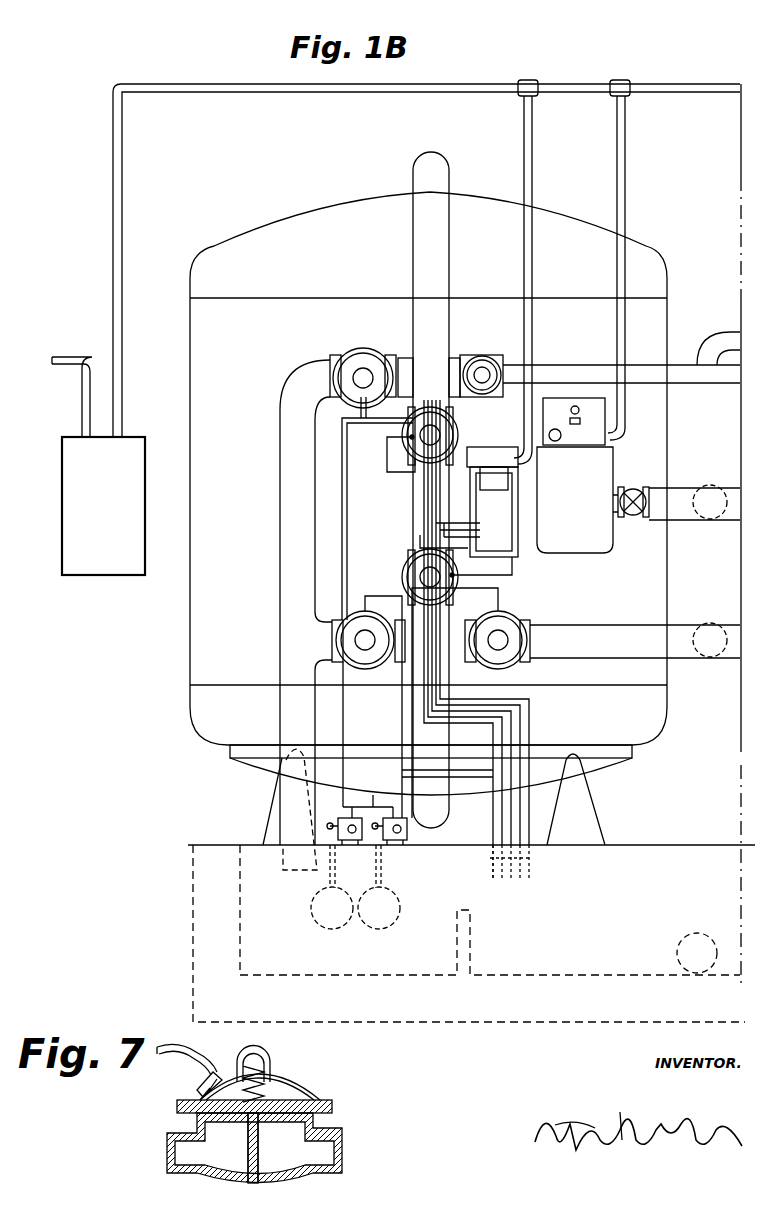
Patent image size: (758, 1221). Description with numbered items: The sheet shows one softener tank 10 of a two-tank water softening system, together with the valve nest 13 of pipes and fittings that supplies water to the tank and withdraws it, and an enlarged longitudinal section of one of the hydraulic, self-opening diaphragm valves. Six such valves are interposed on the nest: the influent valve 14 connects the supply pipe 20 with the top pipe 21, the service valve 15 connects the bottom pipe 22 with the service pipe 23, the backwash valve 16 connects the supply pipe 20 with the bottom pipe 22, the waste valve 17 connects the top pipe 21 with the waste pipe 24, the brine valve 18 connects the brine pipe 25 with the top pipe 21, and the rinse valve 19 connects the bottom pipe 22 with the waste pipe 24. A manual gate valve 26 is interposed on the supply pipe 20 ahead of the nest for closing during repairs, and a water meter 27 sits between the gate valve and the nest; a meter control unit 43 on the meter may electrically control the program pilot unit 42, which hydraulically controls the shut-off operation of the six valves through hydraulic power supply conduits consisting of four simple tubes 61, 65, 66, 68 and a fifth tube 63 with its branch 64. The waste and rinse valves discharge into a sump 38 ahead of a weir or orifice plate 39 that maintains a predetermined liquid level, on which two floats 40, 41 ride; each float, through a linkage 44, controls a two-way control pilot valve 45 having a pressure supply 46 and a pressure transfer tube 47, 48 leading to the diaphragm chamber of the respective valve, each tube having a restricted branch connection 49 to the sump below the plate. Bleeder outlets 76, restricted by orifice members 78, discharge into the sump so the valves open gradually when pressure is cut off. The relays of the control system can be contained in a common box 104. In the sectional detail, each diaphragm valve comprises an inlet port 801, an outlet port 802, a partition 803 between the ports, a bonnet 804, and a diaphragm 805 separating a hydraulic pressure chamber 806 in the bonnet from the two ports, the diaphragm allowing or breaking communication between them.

In FIG. 1B, the softener tank 10 is at (310, 212).
In FIG. 1B, the valve nest 13 is at (393, 477).
In FIG. 1B, the influent valve 14 is at (447, 430).
In FIG. 7, the influent valve 14 is at (328, 1180).
In FIG. 1B, the service valve 15 is at (515, 622).
In FIG. 1B, the backwash valve 16 is at (402, 566).
In FIG. 1B, the waste valve 17 is at (362, 350).
In FIG. 1B, the brine valve 18 is at (485, 357).
In FIG. 1B, the rinse valve 19 is at (350, 632).
In FIG. 1B, the supply pipe 20 is at (707, 523).
In FIG. 1B, the top pipe 21 is at (412, 222).
In FIG. 1B, the bottom pipe 22 is at (450, 672).
In FIG. 1B, the service pipe 23 is at (712, 660).
In FIG. 1B, the waste pipe 24 is at (279, 533).
In FIG. 1B, the brine pipe 25 is at (720, 333).
In FIG. 1B, the manual gate valve 26 is at (632, 489).
In FIG. 1B, the water meter 27 is at (597, 540).
In FIG. 1B, the sump 38 is at (618, 978).
In FIG. 1B, the weir or orifice plate 39 is at (472, 933).
In FIG. 1B, the float 40 is at (318, 924).
In FIG. 1B, the float 41 is at (388, 928).
In FIG. 1B, the program pilot unit 42 is at (487, 457).
In FIG. 1B, the meter control unit 43 is at (593, 415).
In FIG. 1B, the linkage 44 is at (330, 871).
In FIG. 1B, the two-way control pilot valve 45 is at (407, 836).
In FIG. 1B, the pressure supply 46 is at (363, 798).
In FIG. 1B, the pressure transfer tube 47 is at (340, 703).
In FIG. 1B, the pressure transfer tube 48 is at (400, 705).
In FIG. 1B, the restricted branch connection 49 is at (493, 820).
In FIG. 1B, the tube 61 is at (387, 455).
In FIG. 1B, the tube 63 is at (522, 508).
In FIG. 1B, the branch 64 is at (483, 546).
In FIG. 1B, the tube 65 is at (480, 500).
In FIG. 7, the tube 65 is at (175, 1045).
In FIG. 1B, the tube 66 is at (484, 512).
In FIG. 1B, the tube 68 is at (522, 492).
In FIG. 1B, the bleeder outlet 76 is at (520, 738).
In FIG. 1B, the orifice member 78 is at (533, 860).
In FIG. 1B, the common box 104 is at (92, 575).
In FIG. 7, the inlet port 801 is at (207, 1146).
In FIG. 7, the outlet port 802 is at (290, 1150).
In FIG. 7, the partition 803 is at (247, 1152).
In FIG. 7, the bonnet 804 is at (270, 1095).
In FIG. 7, the diaphragm 805 is at (297, 1102).
In FIG. 7, the hydraulic pressure chamber 806 is at (200, 1097).